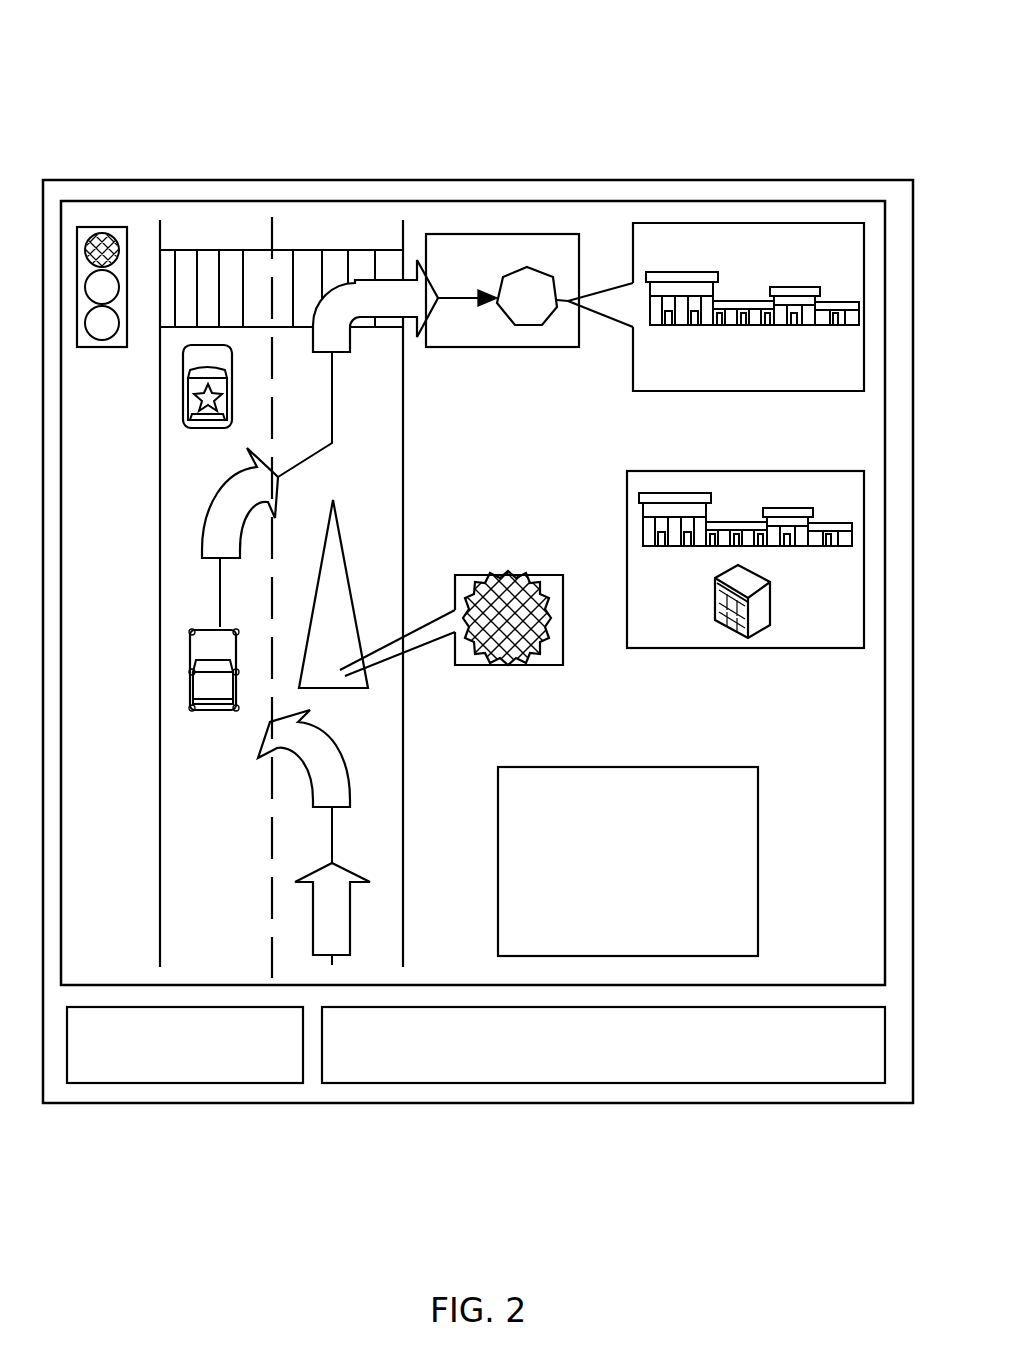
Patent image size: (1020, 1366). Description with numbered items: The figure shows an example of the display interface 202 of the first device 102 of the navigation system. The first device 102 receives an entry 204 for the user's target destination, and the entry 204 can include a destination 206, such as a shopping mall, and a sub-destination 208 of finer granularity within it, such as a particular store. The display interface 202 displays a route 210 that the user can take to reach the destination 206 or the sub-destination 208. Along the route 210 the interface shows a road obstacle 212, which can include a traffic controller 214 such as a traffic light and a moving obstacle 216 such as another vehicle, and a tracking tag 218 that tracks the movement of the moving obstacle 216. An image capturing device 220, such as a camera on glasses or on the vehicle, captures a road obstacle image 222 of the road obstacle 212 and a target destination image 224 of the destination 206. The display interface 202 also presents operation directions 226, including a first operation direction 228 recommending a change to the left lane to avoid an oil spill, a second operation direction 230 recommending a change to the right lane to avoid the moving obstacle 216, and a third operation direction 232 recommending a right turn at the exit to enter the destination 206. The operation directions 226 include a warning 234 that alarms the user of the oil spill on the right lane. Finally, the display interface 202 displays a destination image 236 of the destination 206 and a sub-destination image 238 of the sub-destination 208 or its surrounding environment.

The first device 102 is at (190, 58).
The display interface 202 is at (635, 205).
The entry 204 is at (137, 1022).
The destination 206 is at (473, 248).
The sub-destination 208 is at (538, 280).
The route 210 is at (332, 390).
The road obstacle 212 is at (352, 690).
The traffic controller 214 is at (100, 228).
The moving obstacle 216 is at (193, 350).
The tracking tag 218 is at (208, 395).
The image capturing device 220 is at (208, 715).
The road obstacle image 222 is at (505, 655).
The target destination image 224 is at (745, 305).
The operation directions 226 is at (333, 930).
The first operation direction 228 is at (275, 748).
The second operation direction 230 is at (258, 480).
The third operation direction 232 is at (348, 307).
The warning 234 is at (598, 927).
The destination image 236 is at (805, 540).
The sub-destination image 238 is at (748, 636).